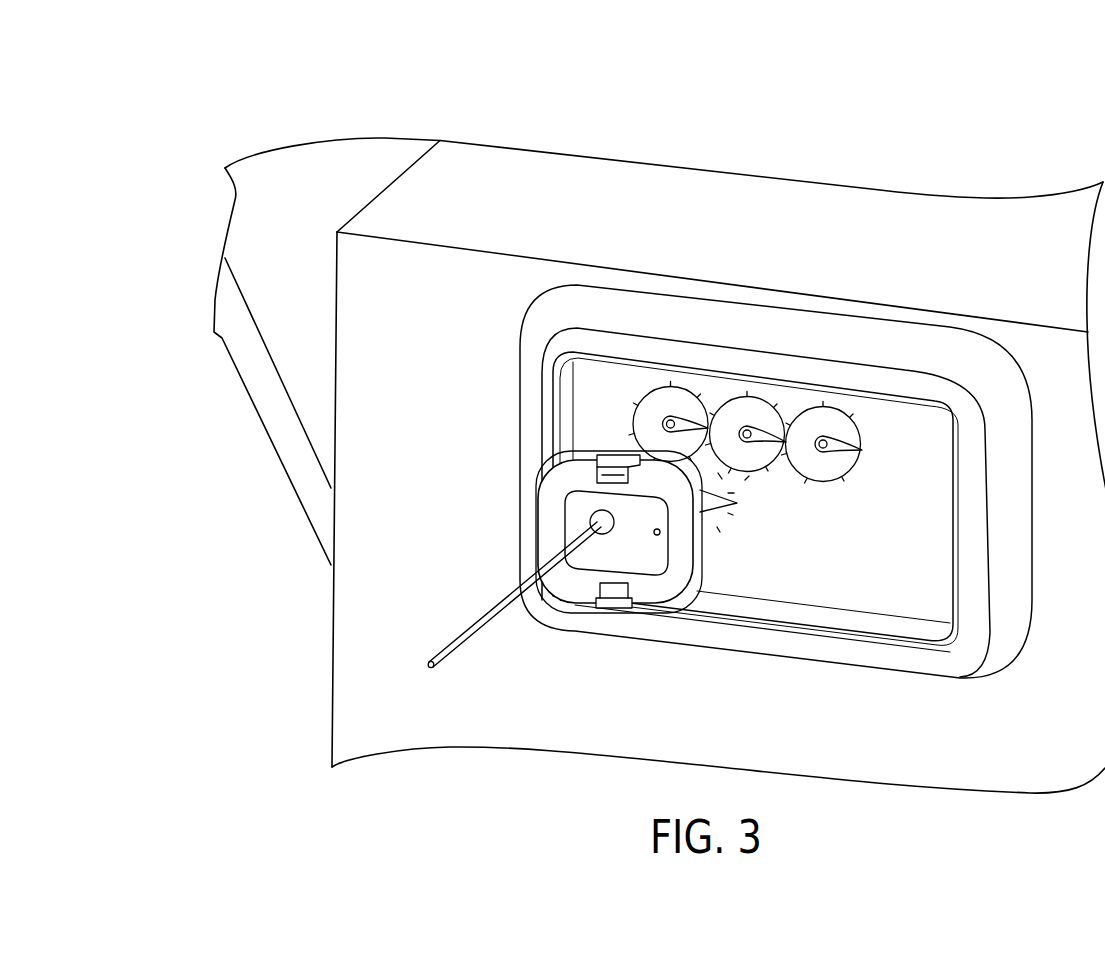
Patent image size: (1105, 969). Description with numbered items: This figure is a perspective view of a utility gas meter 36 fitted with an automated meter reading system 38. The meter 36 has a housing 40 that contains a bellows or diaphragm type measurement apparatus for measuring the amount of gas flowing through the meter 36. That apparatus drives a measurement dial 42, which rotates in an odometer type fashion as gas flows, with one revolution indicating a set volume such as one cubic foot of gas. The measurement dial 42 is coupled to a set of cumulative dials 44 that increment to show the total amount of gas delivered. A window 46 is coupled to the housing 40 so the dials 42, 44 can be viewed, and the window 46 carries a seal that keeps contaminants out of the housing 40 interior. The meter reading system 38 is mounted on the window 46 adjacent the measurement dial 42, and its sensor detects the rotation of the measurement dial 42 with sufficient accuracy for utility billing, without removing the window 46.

The utility gas meter 36 is at (400, 117).
The automated meter reading system 38 is at (548, 530).
The housing 40 is at (330, 672).
The measurement dial 42 is at (741, 512).
The cumulative dials 44 is at (850, 491).
The window 46 is at (800, 597).